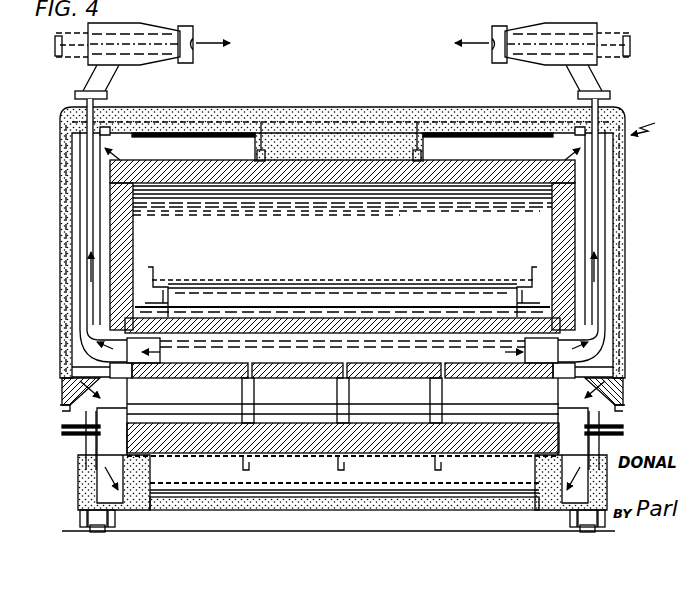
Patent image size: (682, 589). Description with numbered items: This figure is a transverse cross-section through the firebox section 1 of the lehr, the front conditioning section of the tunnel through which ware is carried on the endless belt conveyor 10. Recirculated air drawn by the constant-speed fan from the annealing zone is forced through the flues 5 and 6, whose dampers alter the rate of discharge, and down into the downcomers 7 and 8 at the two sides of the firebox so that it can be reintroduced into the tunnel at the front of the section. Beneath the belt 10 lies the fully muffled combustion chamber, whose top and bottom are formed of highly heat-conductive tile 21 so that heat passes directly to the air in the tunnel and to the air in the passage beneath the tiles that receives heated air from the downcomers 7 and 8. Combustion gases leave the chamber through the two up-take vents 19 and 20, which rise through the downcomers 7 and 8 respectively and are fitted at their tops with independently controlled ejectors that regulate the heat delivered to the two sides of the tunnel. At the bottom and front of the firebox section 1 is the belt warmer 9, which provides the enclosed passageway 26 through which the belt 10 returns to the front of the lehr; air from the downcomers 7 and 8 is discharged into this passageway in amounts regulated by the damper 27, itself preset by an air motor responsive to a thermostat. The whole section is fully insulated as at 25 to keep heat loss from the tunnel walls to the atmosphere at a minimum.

The firebox section 1 is at (342, 245).
The flue 5 is at (186, 150).
The flue 6 is at (456, 147).
The downcomer 7 is at (76, 313).
The downcomer 8 is at (611, 300).
The belt warmer 9 is at (100, 483).
The endless belt conveyor 10 is at (347, 283).
The up-take vent 19 is at (153, 40).
The up-take vent 20 is at (541, 36).
The heat-conductive tile 21 is at (397, 372).
The insulation 25 is at (62, 186).
The enclosed passageway 26 is at (238, 492).
The damper 27 is at (135, 407).